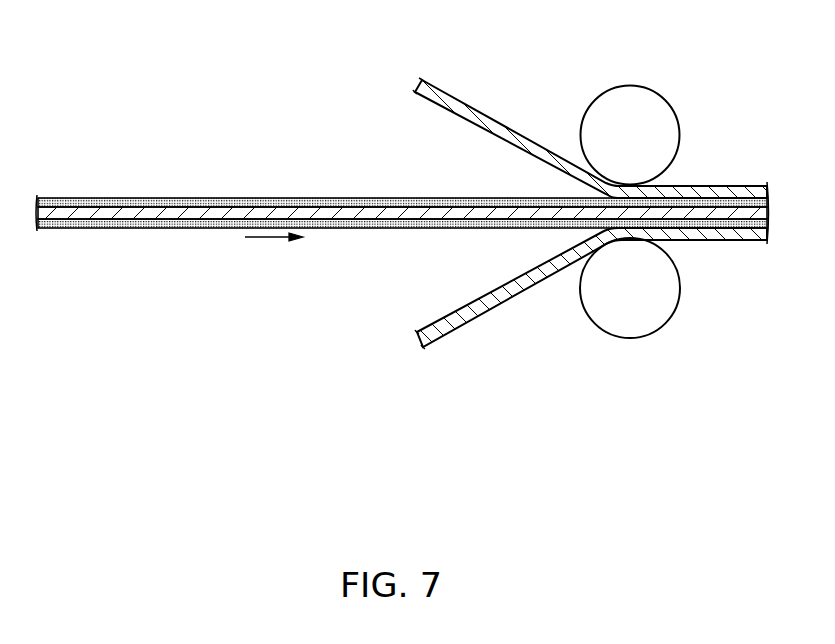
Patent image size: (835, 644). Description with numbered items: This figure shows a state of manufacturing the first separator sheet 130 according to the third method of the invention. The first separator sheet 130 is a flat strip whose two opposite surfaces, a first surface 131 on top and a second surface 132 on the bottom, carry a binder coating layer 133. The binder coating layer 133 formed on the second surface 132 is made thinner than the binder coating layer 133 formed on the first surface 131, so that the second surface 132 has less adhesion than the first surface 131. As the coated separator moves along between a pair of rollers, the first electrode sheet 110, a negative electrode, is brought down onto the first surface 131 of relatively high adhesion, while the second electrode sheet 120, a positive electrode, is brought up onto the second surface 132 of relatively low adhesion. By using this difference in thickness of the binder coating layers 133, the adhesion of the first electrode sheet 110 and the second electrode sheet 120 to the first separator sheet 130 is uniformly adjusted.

The first electrode sheet 110 is at (498, 125).
The second electrode sheet 120 is at (497, 298).
The first separator sheet 130 is at (398, 211).
The first surface 131 is at (58, 198).
The second surface 132 is at (59, 228).
The binder coating layer 133 is at (398, 211).